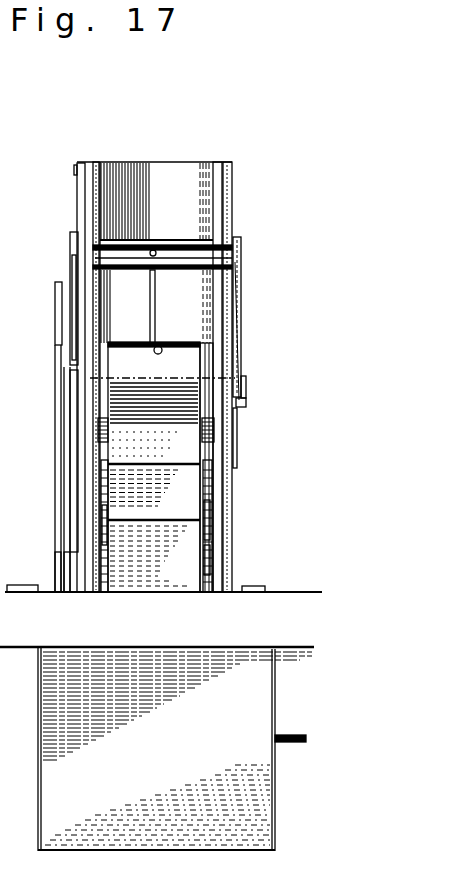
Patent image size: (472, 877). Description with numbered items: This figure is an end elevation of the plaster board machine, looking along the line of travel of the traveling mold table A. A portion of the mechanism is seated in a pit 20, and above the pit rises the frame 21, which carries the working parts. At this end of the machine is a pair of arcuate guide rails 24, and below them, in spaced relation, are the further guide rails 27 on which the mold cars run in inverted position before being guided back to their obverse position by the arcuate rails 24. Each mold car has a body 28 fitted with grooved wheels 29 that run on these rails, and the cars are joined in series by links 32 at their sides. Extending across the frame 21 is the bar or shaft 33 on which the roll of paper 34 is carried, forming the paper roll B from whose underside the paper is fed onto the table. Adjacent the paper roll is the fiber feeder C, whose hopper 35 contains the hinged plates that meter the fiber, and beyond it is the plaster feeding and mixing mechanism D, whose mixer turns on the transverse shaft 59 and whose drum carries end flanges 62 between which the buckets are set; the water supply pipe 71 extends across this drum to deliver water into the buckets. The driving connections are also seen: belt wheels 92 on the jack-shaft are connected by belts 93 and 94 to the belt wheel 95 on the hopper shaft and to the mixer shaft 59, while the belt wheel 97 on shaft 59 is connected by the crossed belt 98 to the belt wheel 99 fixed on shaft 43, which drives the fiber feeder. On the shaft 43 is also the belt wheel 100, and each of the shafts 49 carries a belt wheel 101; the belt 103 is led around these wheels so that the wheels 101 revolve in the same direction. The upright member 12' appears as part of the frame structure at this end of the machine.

The upright post 12' is at (59, 377).
The frame 21 is at (232, 176).
The hopper 35 is at (200, 212).
The belt wheel 100 is at (71, 238).
The belt wheel 99 is at (242, 241).
The belt 103 is at (73, 268).
The shaft 43 is at (243, 256).
The belt wheel 95 is at (58, 296).
The crossed belt 98 is at (238, 290).
The roll of paper 34 is at (185, 343).
The bar or shaft 33 is at (210, 372).
The shafts 49 is at (73, 353).
The transverse shaft 59 is at (246, 389).
The belt wheel 101 is at (72, 362).
The belt wheel 97 is at (248, 408).
The belt 94 is at (73, 425).
The flanges 62 is at (212, 441).
The belt 93 is at (98, 442).
The water supply pipe 71 is at (232, 468).
The body 28 is at (212, 493).
The guide rails 27 is at (97, 498).
The grooved wheels 29 is at (212, 546).
The links 32 is at (213, 528).
The belt wheels 92 is at (68, 566).
The arcuate guide rails 24 is at (101, 596).
The pit 20 is at (38, 815).
The fiber feeder C is at (155, 189).
The paper roll B is at (200, 343).
The traveling mold table A is at (213, 498).
The plaster feeding and mixing mechanism D is at (114, 528).